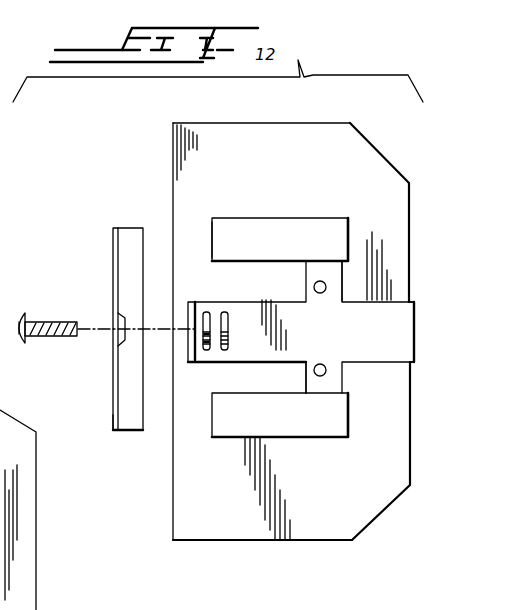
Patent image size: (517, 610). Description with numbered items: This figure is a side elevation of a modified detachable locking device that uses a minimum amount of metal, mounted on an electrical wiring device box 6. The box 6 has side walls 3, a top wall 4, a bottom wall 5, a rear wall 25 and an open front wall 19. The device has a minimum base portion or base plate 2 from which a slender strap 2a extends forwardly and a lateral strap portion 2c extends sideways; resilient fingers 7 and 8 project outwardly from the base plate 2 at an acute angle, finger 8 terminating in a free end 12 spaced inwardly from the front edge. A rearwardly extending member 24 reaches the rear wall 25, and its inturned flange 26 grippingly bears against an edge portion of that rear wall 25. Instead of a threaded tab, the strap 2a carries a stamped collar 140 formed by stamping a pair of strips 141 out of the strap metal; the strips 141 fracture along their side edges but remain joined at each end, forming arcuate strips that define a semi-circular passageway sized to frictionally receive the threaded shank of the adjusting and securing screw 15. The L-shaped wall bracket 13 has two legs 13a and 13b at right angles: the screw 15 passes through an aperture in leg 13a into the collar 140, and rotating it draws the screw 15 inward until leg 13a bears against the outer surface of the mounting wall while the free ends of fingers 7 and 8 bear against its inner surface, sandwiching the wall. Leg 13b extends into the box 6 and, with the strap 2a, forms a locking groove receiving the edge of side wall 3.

The base plate 2 is at (300, 340).
The slender strap 2a is at (293, 388).
The lateral strap portion 2c is at (10, 474).
The side wall 3 is at (338, 128).
The top wall 4 is at (218, 123).
The bottom wall 5 is at (243, 541).
The electrical wiring device box 6 is at (371, 514).
The resilient finger 7 is at (310, 438).
The resilient finger 8 is at (250, 225).
The free end 12 is at (212, 232).
The wall bracket 13 is at (113, 235).
The elongated leg portion 13a is at (113, 423).
The elongated leg portion 13b is at (128, 432).
The adjusting and securing screw 15 is at (42, 322).
The open front wall 19 is at (172, 165).
The rearwardly extending member 24 is at (414, 330).
The rear wall 25 is at (409, 232).
The inturned flange 26 is at (344, 295).
The stamped collar 140 is at (203, 341).
The strips 141 is at (205, 318).